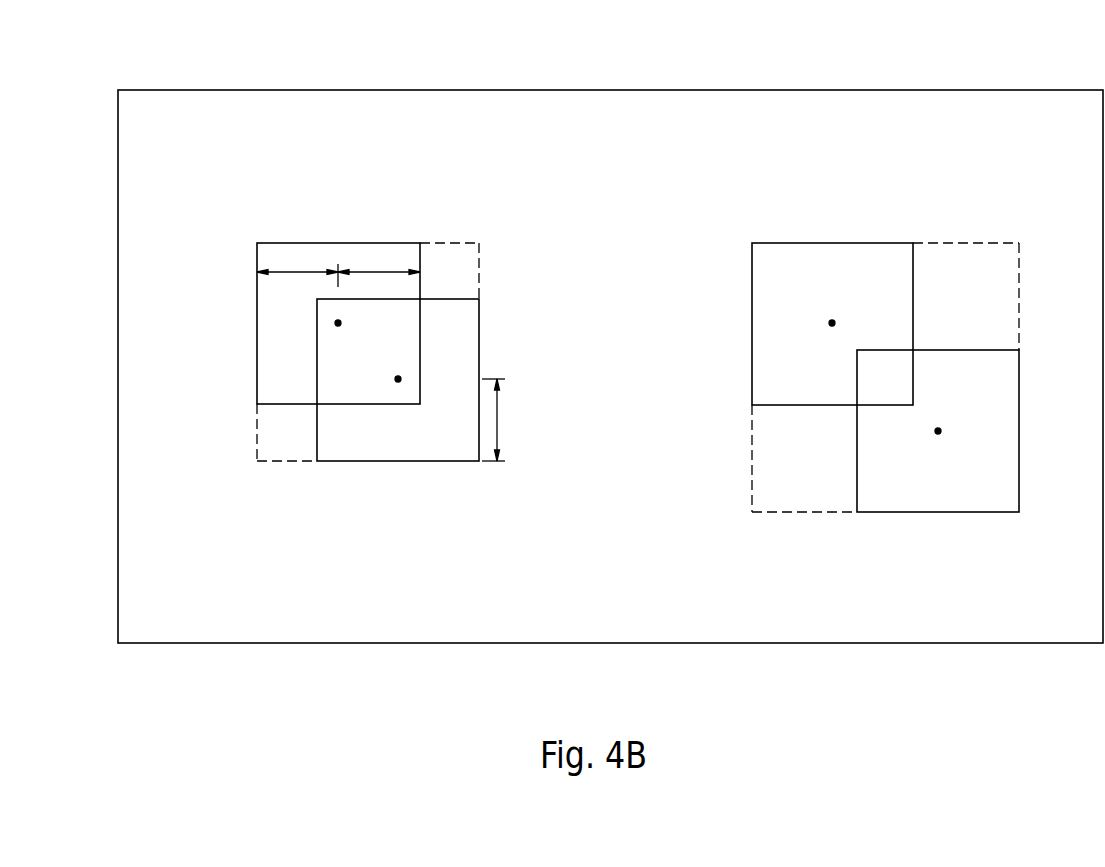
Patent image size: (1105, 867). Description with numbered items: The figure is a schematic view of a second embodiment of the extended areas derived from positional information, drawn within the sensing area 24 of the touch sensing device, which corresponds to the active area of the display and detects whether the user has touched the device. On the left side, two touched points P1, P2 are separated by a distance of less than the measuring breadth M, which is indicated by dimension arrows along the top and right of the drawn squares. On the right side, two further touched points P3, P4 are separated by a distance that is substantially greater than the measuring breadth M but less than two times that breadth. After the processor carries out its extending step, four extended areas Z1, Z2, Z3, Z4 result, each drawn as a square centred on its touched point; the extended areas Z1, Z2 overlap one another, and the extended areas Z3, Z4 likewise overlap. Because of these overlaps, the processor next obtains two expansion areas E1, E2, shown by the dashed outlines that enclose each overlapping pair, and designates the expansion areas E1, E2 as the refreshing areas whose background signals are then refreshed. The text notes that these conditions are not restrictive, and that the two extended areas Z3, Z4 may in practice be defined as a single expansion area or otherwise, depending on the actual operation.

The sensing area 24 is at (838, 90).
The first extended area Z1 is at (275, 243).
The second extended area Z2 is at (430, 461).
The third extended area Z3 is at (768, 243).
The fourth extended area Z4 is at (970, 512).
The touched point P1 is at (338, 323).
The touched point P2 is at (398, 379).
The touched point P3 is at (832, 323).
The touched point P4 is at (938, 431).
The expansion area E1 is at (283, 462).
The expansion area E2 is at (780, 513).
The measuring breadth M is at (388, 354).